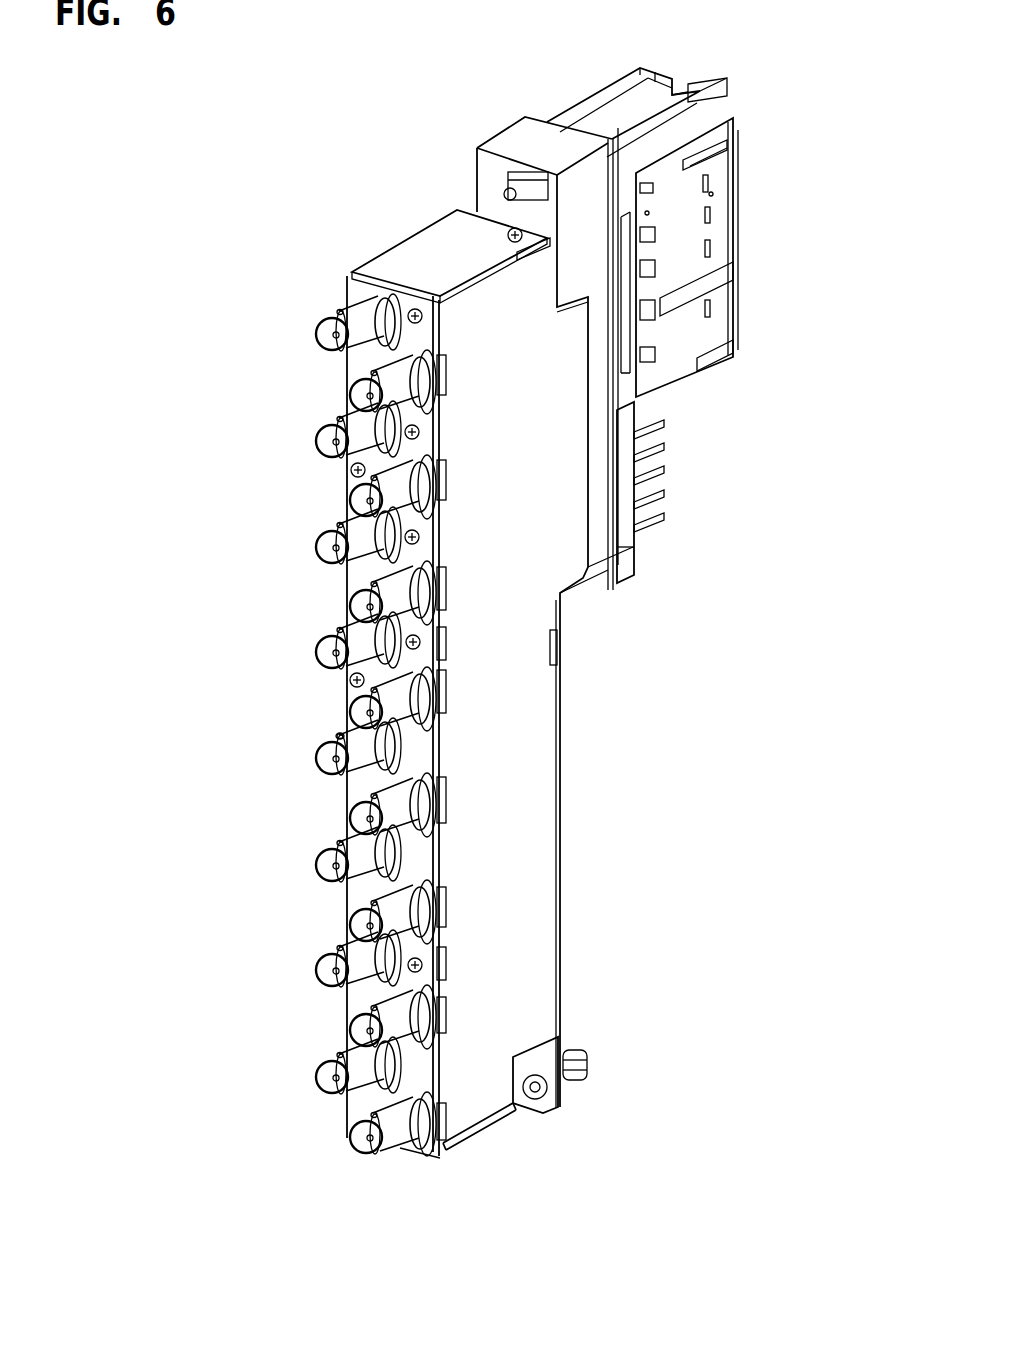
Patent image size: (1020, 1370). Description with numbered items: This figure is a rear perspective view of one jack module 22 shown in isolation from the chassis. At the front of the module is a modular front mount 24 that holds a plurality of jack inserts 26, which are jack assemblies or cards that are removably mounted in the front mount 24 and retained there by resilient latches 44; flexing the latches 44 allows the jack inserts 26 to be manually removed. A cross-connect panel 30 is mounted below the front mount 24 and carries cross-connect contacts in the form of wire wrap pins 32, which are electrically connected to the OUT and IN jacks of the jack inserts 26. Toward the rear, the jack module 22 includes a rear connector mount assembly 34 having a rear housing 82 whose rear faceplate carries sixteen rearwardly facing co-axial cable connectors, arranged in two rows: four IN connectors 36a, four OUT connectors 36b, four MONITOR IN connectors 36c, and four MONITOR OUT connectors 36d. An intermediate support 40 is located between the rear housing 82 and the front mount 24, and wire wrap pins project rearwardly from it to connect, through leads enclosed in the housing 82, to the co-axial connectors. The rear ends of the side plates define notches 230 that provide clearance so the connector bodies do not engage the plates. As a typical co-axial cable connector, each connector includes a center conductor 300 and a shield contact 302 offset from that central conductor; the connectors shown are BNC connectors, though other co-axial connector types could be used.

The jack module 22 is at (148, 210).
The modular front mount 24 is at (597, 95).
The jack inserts 26 is at (727, 198).
The cross-connect panel 30 is at (632, 568).
The wire wrap pins 32 is at (660, 512).
The rear connector mount assembly 34 is at (307, 290).
The IN connectors 36a is at (348, 716).
The OUT connectors 36b is at (343, 608).
The MONITOR IN connectors 36c is at (424, 1118).
The MONITOR OUT connectors 36d is at (345, 1030).
The intermediate support 40 is at (593, 265).
The resilient latches 44 is at (733, 345).
The rear housing 82 is at (488, 1167).
The notches 230 is at (447, 382).
The center conductor 300 is at (328, 757).
The shield contact 302 is at (336, 738).